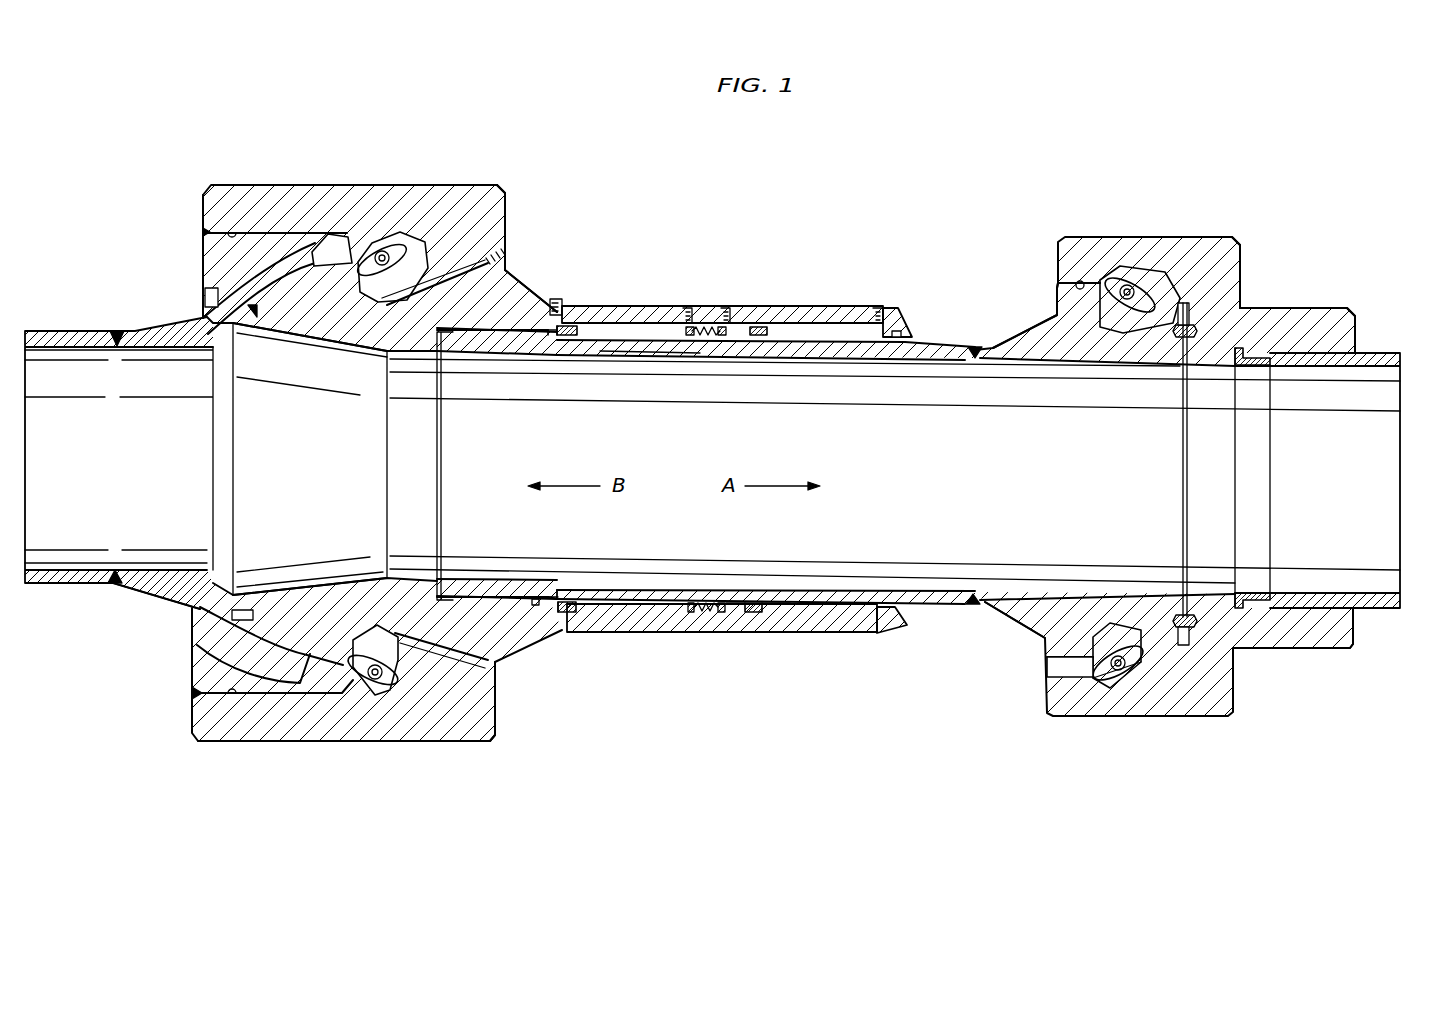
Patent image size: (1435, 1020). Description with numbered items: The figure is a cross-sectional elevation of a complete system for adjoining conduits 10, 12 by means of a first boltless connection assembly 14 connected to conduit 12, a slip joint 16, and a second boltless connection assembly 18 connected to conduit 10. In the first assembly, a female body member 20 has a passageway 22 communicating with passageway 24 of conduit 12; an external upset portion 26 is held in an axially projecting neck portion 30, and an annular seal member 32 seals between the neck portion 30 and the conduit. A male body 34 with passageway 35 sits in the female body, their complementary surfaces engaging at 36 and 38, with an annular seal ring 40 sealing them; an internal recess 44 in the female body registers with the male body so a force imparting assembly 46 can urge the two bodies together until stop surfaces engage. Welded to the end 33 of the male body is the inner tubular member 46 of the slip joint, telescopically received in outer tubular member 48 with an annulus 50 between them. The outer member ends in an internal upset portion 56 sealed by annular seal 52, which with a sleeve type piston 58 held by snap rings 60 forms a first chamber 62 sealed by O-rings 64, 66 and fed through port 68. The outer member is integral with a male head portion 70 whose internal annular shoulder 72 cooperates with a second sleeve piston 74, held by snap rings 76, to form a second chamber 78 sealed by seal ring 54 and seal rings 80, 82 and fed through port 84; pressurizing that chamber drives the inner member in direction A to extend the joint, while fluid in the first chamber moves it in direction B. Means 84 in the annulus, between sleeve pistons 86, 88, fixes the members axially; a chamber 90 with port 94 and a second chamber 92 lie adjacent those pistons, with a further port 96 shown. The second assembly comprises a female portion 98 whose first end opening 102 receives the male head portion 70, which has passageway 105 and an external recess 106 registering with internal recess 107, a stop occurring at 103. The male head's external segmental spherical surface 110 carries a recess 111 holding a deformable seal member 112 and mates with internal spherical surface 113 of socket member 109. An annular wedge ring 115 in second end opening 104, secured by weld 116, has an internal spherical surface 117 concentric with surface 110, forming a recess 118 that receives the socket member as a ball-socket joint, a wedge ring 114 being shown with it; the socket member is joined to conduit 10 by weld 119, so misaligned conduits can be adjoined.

The conduit 10 is at (70, 331).
The conduit 12 is at (1382, 352).
The first boltless connection assembly 14 is at (1180, 236).
The slip joint 16 is at (850, 296).
The second boltless connection assembly 18 is at (326, 176).
The female body member 20 is at (1228, 258).
The passageway 22 is at (1047, 672).
The passageway 24 is at (1335, 594).
The external upset portion 26 is at (1280, 316).
The neck portion 30 is at (1305, 646).
The annular seal member 32 is at (1246, 350).
The end of male body 33 is at (1005, 598).
The male body 34 is at (1042, 335).
The passageway 35 is at (1058, 592).
The mating engagement surface 36 is at (1080, 283).
The mating engagement surface 38 is at (1178, 650).
The annular seal ring 40 is at (1190, 630).
The internal annular recess 44 is at (1105, 690).
The force imparting assembly / inner tubular member 46 is at (383, 692).
The outer tubular member 48 is at (666, 306).
The annulus 50 is at (650, 612).
The annular seal 52 is at (895, 616).
The seal ring 54 is at (536, 608).
The internal upset portion 56 is at (910, 322).
The sleeve type piston 58 is at (752, 600).
The snap rings 60 is at (748, 612).
The first chamber 62 is at (866, 322).
The O-ring 64 is at (790, 313).
The O-ring 66 is at (758, 338).
The port 68 is at (892, 308).
The male head portion 70 is at (512, 292).
The internal annular shoulder 72 is at (560, 342).
The second sleeve piston 74 is at (616, 308).
The snap rings 76 is at (572, 600).
The second chamber 78 is at (565, 614).
The inner seal ring 80 is at (572, 338).
The outer seal ring 82 is at (566, 324).
The port / fixing means 84 is at (553, 298).
The sleeve piston 86 is at (688, 340).
The sleeve piston 88 is at (722, 340).
The chamber 90 is at (655, 355).
The second chamber 92 is at (752, 310).
The port 94 is at (688, 308).
The spring clip 96 is at (727, 308).
The female portion 98 is at (460, 184).
The first end opening 102 is at (456, 692).
The stop surface 103 is at (488, 205).
The second end opening 104 is at (238, 232).
The passageway 105 is at (360, 560).
The external annular recess 106 is at (352, 300).
The internal annular recess 107 is at (392, 252).
The socket member 109 is at (190, 603).
The external segmental spherical surface 110 is at (265, 600).
The external annular recess 111 is at (262, 338).
The deformable seal member 112 is at (230, 636).
The internal segmental spherical surface 113 is at (245, 695).
The wedge ring 114 is at (272, 262).
The annular wedge ring 115 is at (213, 262).
The weld 116 is at (203, 232).
The internal segmental spherical surface 117 is at (218, 300).
The recess 118 is at (338, 248).
The weld 119 is at (117, 328).